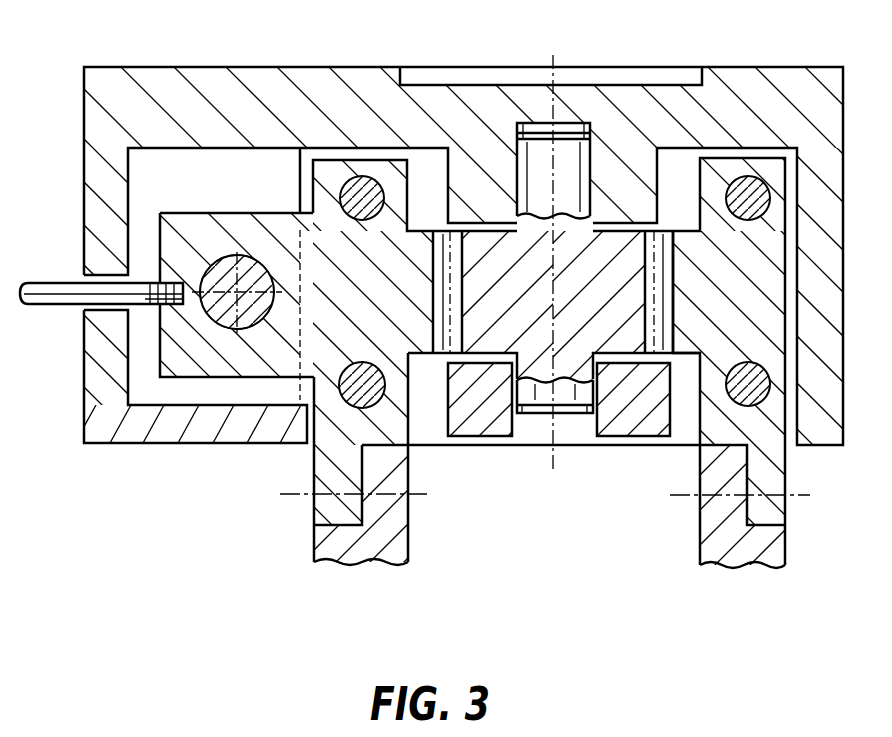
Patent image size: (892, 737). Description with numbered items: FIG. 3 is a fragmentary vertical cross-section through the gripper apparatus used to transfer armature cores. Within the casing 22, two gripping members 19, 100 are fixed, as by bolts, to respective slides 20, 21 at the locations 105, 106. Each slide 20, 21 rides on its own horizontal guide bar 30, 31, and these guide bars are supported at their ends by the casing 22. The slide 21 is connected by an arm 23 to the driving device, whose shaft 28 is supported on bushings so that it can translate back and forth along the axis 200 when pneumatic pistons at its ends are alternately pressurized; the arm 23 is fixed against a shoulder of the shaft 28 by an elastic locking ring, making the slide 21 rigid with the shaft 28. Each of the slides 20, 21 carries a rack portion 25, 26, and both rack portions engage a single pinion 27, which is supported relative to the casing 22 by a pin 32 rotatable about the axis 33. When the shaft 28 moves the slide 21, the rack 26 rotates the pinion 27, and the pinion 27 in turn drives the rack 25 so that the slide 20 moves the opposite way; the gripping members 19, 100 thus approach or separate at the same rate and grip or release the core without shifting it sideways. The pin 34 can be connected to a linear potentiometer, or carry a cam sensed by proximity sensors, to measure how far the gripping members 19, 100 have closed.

The casing 22 is at (795, 78).
The arm 23 is at (199, 348).
The rack portion 26 is at (421, 230).
The slide 21 is at (326, 478).
The gripping member 100 is at (401, 543).
The bolt fixing location 106 is at (315, 497).
The rack portion 25 is at (686, 233).
The slide 20 is at (780, 468).
The gripping member 19 is at (717, 544).
The bolt fixing location 105 is at (787, 499).
The pinion 27 is at (605, 338).
The pin 32 is at (586, 161).
The axis 33 is at (553, 455).
The horizontal guide bar 31 is at (340, 197).
The horizontal guide bar 30 is at (744, 186).
The shaft 28 is at (222, 260).
The axis 200 is at (238, 298).
The pin 34 is at (47, 303).